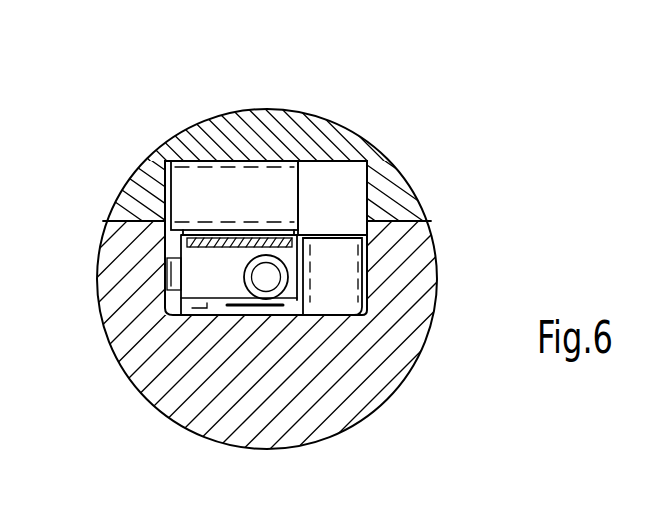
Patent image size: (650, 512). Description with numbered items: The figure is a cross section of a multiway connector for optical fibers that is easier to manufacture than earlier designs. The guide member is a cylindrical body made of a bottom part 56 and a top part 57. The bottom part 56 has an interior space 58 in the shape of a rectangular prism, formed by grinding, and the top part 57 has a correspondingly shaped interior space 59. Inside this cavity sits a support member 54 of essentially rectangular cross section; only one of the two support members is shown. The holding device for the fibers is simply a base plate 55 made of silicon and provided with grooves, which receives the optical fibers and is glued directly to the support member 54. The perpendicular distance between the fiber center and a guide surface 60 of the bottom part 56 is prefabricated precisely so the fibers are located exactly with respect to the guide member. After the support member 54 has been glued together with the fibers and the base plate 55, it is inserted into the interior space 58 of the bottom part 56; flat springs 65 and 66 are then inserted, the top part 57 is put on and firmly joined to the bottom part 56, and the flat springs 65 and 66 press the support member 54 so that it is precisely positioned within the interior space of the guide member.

The support member 54 is at (192, 290).
The base plate 55 is at (214, 230).
The bottom part 56 is at (343, 362).
The top part 57 is at (157, 174).
The interior space 58 is at (187, 243).
The interior space 59 is at (350, 180).
The guide surface 60 is at (224, 296).
The flat spring 65 is at (340, 256).
The flat spring 66 is at (279, 178).